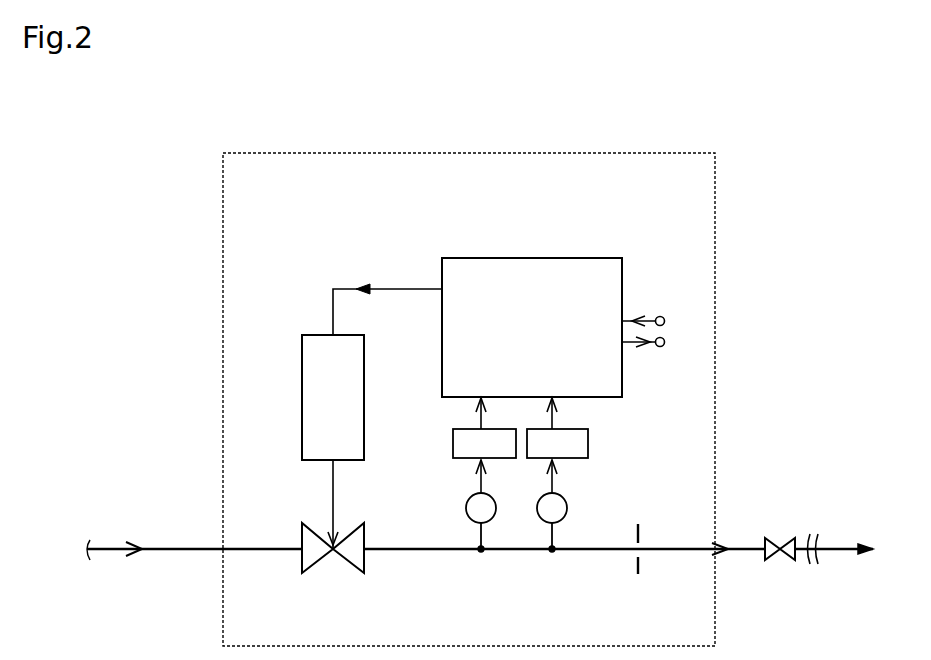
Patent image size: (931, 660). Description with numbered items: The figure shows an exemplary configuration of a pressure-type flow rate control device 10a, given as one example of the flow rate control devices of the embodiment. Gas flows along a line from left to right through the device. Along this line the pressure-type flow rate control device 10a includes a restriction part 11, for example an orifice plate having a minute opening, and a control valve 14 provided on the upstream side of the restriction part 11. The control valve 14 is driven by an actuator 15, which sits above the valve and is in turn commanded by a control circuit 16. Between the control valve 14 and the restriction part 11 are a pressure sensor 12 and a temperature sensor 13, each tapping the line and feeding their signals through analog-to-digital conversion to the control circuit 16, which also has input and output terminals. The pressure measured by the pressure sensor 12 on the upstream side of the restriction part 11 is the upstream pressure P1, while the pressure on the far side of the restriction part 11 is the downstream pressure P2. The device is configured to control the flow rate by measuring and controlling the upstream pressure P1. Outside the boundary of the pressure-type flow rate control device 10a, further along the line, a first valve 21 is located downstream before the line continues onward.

The pressure-type flow rate control device 10a is at (630, 153).
The control circuit 16 is at (523, 258).
The actuator 15 is at (302, 399).
The control valve 14 is at (344, 556).
The temperature sensor 13 is at (470, 517).
The pressure sensor 12 is at (540, 517).
The restriction part 11 is at (636, 558).
The first valve 21 is at (780, 541).
The upstream pressure P1 is at (592, 551).
The downstream pressure P2 is at (682, 551).